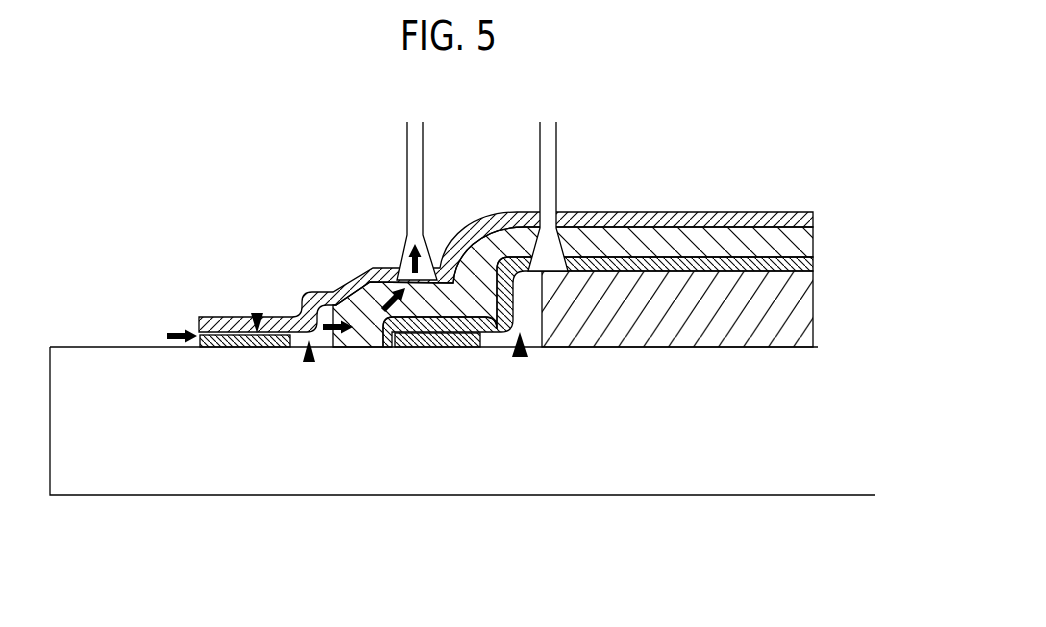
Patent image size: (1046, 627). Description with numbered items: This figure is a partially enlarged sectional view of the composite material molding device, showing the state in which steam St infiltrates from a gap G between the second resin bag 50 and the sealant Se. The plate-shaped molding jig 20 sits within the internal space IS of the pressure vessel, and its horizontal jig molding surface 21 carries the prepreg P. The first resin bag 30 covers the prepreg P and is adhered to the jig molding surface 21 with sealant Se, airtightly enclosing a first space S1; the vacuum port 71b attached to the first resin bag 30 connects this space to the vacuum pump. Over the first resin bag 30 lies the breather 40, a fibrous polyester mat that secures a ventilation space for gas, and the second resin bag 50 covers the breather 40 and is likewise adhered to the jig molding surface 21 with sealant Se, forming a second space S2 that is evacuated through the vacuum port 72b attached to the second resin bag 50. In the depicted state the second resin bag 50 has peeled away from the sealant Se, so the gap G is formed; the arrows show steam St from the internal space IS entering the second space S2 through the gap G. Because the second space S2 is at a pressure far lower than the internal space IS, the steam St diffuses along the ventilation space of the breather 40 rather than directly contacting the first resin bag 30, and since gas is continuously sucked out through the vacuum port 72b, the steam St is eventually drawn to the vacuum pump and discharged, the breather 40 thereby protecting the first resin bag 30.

The molding jig 20 is at (233, 488).
The jig molding surface 21 is at (76, 346).
The first resin bag 30 is at (662, 256).
The breather 40 is at (717, 226).
The second resin bag 50 is at (777, 211).
The vacuum port 71b is at (572, 232).
The vacuum port 72b is at (401, 257).
The gap G is at (257, 314).
The internal space IS is at (187, 185).
The prepreg P is at (657, 348).
The first space S1 is at (520, 357).
The second space S2 is at (309, 362).
The sealant Se is at (242, 348).
The steam St is at (175, 330).